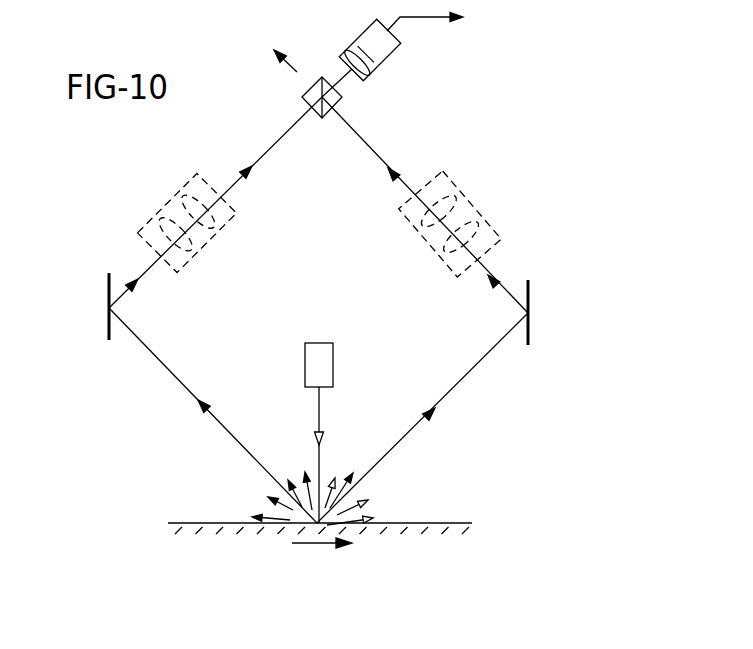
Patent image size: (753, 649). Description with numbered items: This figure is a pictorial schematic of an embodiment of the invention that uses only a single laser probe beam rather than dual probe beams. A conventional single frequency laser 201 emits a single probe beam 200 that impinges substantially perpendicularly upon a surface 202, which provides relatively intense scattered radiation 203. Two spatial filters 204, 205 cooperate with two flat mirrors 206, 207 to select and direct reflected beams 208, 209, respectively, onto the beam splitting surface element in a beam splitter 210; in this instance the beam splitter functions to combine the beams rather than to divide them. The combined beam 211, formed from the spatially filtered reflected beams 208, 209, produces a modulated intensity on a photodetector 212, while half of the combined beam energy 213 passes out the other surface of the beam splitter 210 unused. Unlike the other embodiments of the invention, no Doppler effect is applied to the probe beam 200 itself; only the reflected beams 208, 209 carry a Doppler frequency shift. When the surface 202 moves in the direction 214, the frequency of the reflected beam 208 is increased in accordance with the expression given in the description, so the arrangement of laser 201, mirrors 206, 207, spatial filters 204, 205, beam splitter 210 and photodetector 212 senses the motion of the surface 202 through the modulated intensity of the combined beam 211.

The probe beam 200 is at (319, 425).
The single frequency laser 201 is at (305, 363).
The surface 202 is at (228, 523).
The scattered radiation 203 is at (346, 498).
The spatial filter 204 is at (468, 203).
The spatial filter 205 is at (224, 243).
The flat mirror 206 is at (528, 282).
The flat mirror 207 is at (108, 341).
The reflected beam 208 is at (422, 418).
The reflected beam 209 is at (225, 430).
The beam splitter 210 is at (343, 105).
The combined beam 211 is at (340, 78).
The photodetector 212 is at (388, 64).
The unused combined beam energy 213 is at (296, 74).
The direction of surface motion 214 is at (308, 544).